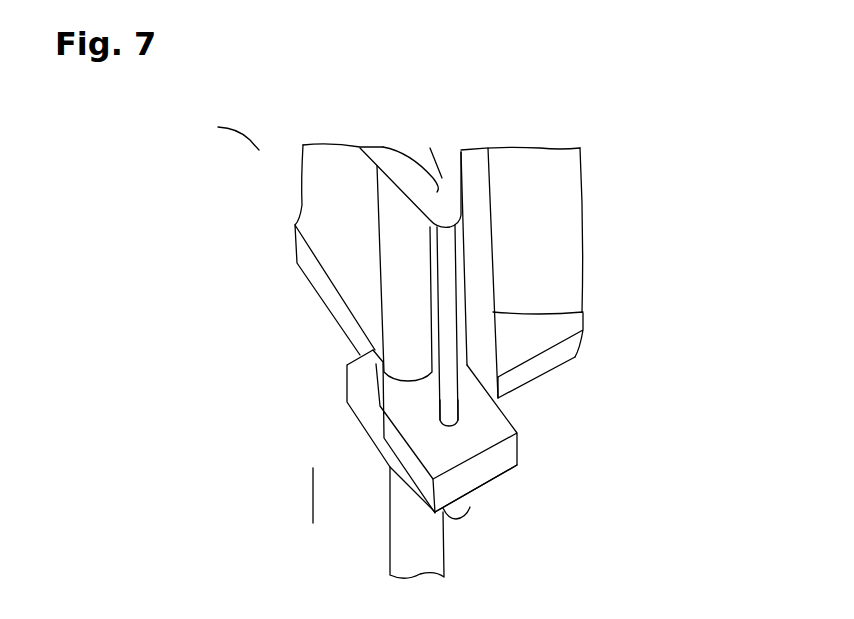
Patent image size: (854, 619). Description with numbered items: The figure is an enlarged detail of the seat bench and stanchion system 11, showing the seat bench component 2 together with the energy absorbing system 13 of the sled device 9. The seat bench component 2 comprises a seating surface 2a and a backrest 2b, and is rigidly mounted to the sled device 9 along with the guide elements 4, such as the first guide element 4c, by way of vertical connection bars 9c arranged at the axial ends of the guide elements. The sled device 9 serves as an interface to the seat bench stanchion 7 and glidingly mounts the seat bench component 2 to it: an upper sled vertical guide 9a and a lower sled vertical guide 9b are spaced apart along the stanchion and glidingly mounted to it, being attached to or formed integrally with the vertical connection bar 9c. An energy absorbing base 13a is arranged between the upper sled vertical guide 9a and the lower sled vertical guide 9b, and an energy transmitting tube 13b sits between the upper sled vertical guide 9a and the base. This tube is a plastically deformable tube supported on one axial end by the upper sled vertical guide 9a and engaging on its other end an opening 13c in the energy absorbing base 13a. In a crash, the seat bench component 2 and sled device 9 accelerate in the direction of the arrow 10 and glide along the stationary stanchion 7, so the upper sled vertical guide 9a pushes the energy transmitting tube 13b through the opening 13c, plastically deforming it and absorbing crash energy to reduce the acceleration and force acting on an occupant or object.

The seat bench component 2 is at (594, 213).
The seating surface 2a is at (332, 202).
The backrest 2b is at (545, 180).
The guide elements 4 is at (594, 346).
The first guide element 4c is at (558, 356).
The seat bench stanchion 7 is at (427, 557).
The sled device 9 is at (431, 128).
The upper sled vertical guide 9a is at (385, 147).
The lower sled vertical guide 9b is at (463, 517).
The vertical connection bar 9c is at (478, 206).
The arrow 10 is at (313, 490).
The seat bench and stanchion system 11 is at (223, 133).
The energy absorbing system 13 is at (527, 424).
The energy absorbing base 13a is at (487, 437).
The energy transmitting tube 13b is at (443, 328).
The opening 13c is at (453, 406).